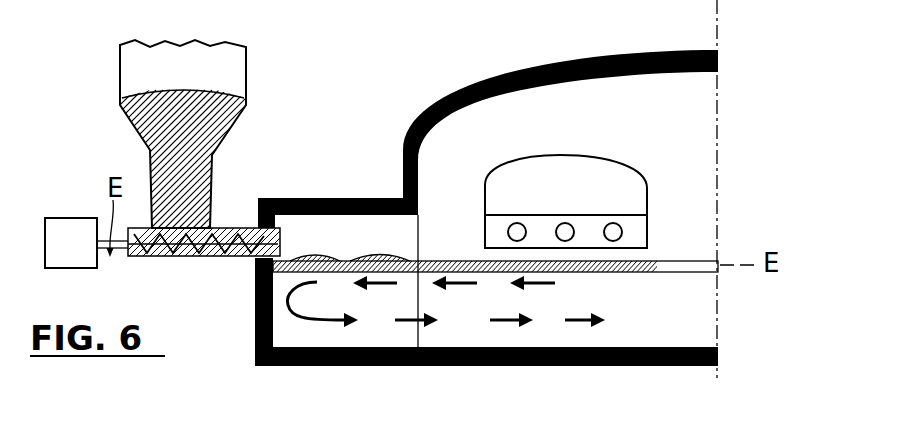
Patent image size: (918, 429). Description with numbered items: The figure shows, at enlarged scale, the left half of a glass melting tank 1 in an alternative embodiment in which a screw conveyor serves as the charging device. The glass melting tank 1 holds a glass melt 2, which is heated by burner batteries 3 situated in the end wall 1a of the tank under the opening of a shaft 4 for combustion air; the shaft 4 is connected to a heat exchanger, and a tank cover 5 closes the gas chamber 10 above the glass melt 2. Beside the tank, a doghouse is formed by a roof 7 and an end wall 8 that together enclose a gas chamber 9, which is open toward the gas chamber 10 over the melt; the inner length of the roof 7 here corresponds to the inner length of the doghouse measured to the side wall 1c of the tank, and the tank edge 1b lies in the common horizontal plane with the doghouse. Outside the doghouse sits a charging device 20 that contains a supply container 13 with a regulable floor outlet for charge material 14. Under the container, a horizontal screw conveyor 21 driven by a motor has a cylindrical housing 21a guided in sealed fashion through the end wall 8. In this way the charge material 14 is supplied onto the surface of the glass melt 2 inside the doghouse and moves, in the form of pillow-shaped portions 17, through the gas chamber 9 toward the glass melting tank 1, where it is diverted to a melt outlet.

The glass melting tank 1 is at (722, 356).
The end wall 1a is at (694, 125).
The tank edge 1b is at (470, 248).
The side wall 1c is at (430, 181).
The glass melt 2 is at (690, 314).
The burner batteries 3 is at (660, 231).
The shaft 4 is at (630, 189).
The tank cover 5 is at (720, 60).
The roof 7 is at (322, 188).
The end wall 8 is at (246, 206).
The gas chamber 9 is at (362, 240).
The gas chamber 10 is at (622, 128).
The supply container 13 is at (232, 70).
The charge material 14 is at (200, 80).
The portions 17 is at (396, 240).
The charging device 20 is at (177, 149).
The screw conveyor 21 is at (144, 229).
The housing 21a is at (222, 211).